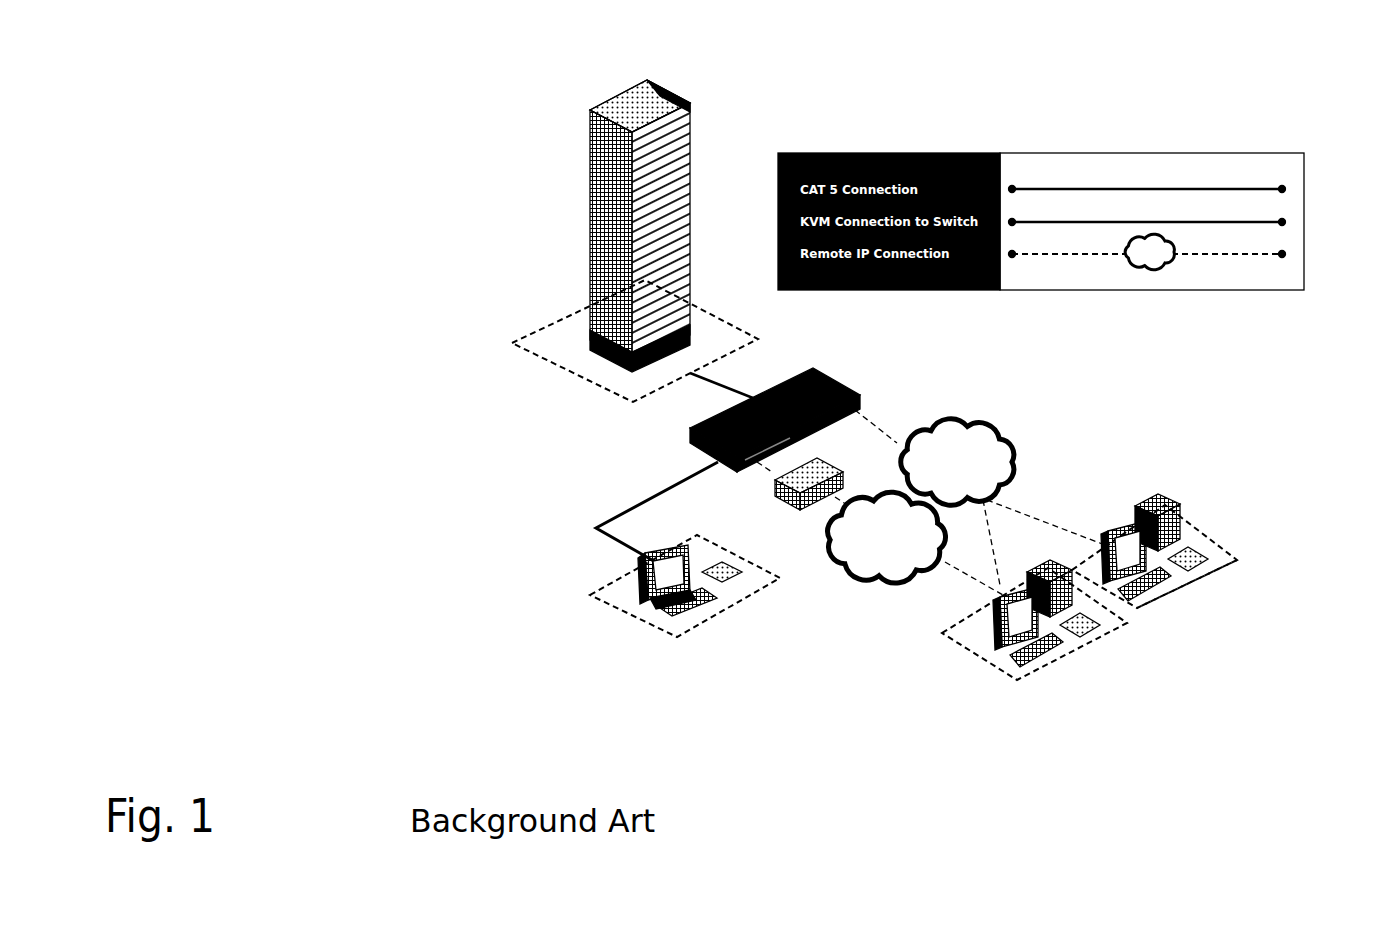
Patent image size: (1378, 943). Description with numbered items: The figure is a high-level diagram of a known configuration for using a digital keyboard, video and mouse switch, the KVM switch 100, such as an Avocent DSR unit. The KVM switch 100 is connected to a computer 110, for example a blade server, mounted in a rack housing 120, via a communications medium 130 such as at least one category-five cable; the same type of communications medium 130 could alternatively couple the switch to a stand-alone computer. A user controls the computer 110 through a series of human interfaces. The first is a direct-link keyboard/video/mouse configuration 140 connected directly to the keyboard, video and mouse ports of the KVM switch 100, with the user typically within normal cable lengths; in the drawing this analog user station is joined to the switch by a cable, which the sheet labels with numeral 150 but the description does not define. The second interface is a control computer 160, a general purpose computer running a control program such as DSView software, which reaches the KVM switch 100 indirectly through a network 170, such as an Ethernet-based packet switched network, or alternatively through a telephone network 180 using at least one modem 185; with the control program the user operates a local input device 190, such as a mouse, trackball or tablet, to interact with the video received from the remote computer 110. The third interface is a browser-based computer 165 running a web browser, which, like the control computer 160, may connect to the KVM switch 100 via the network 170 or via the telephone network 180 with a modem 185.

The KVM switch 100 is at (832, 367).
The computer 110 is at (688, 87).
The rack housing 120 is at (643, 72).
The communications medium 130 is at (710, 380).
The direct-link keyboard/video/mouse configuration 140 is at (598, 598).
The KVM connection 150 is at (598, 505).
The control computer 160 is at (1217, 585).
The browser-based computer 165 is at (1125, 632).
The network 170 is at (1010, 412).
The telephone network 180 is at (893, 585).
The modem 185 is at (800, 514).
The local input device 190 is at (1218, 552).